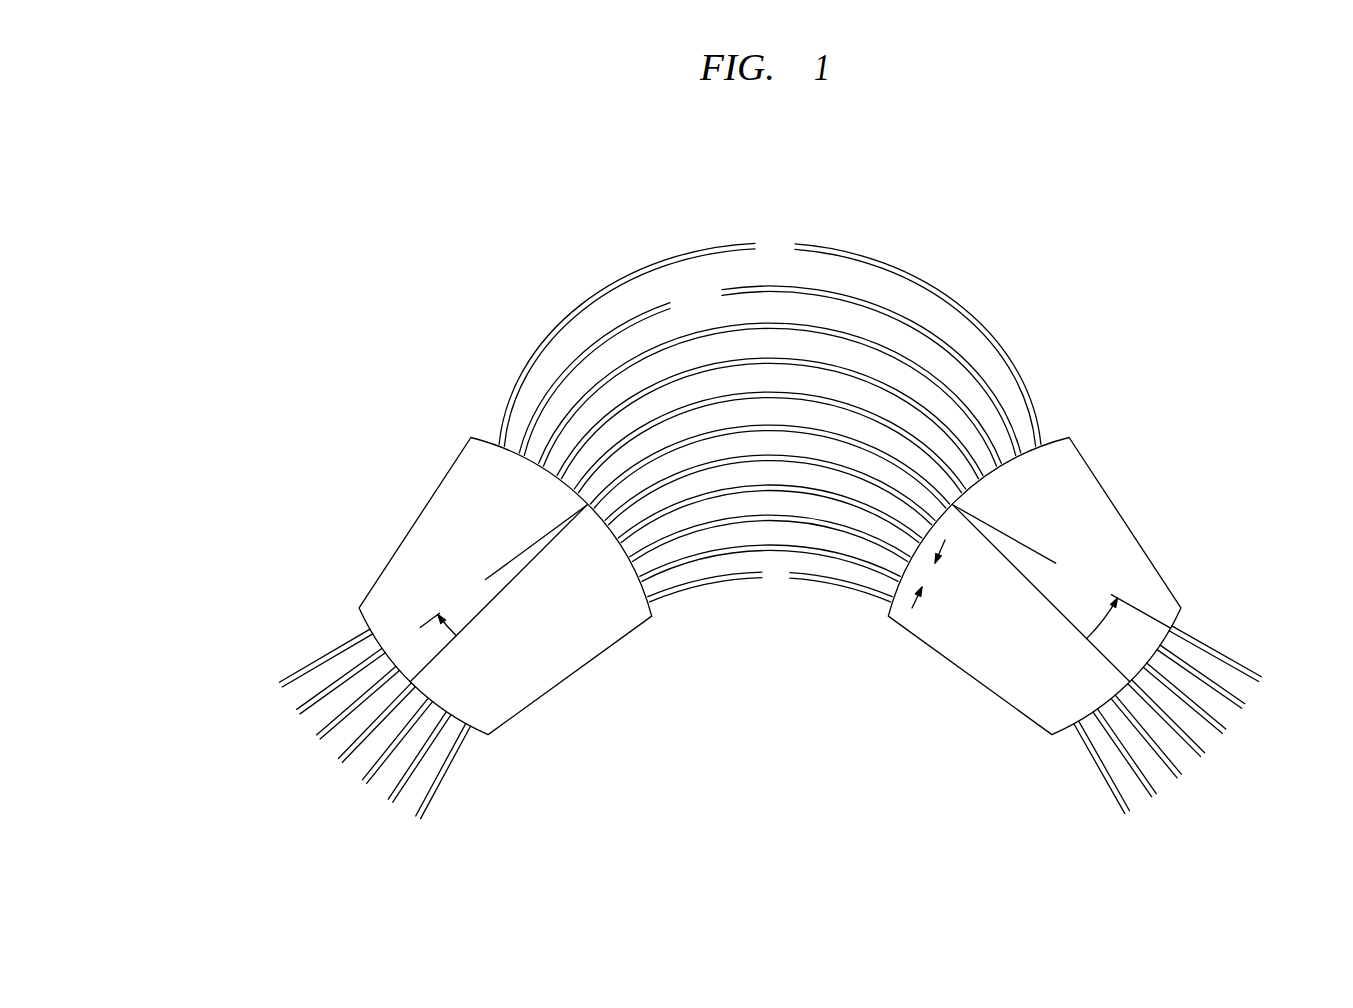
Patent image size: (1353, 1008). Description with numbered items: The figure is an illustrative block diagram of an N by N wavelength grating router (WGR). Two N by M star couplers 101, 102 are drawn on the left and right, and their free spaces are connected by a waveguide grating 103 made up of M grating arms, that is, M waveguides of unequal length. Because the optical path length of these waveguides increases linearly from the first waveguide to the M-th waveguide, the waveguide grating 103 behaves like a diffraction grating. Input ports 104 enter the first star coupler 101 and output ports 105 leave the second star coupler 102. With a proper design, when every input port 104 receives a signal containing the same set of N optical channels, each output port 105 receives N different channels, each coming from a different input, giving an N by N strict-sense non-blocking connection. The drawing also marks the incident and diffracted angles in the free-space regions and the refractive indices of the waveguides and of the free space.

The N×M star coupler 101 is at (677, 611).
The N×M star coupler 102 is at (1058, 765).
The waveguide grating 103 is at (770, 374).
The input port 104 is at (367, 906).
The output port 105 is at (1288, 685).